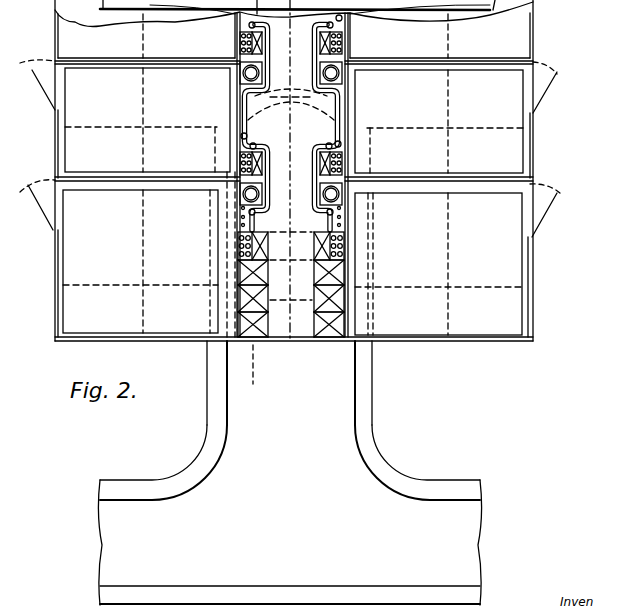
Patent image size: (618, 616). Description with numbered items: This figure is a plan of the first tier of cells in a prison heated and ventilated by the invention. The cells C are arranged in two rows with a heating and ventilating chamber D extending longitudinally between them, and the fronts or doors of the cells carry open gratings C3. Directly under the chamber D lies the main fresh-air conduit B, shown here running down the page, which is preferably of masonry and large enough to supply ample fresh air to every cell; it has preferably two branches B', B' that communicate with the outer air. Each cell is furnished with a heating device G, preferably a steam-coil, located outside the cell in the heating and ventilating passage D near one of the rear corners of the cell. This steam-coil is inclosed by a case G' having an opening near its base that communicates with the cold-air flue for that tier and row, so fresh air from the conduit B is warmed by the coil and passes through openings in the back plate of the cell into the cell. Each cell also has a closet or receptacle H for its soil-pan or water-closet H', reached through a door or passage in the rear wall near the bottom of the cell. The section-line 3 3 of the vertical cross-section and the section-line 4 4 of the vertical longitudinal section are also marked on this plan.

The main fresh-air conduit B is at (289, 383).
The branch of the fresh-air conduit B' is at (289, 515).
The cell C is at (293, 202).
The open grating C3 is at (300, 198).
The heating and ventilating chamber D is at (291, 170).
The heating device G is at (345, 43).
The case G' is at (229, 43).
The closet or receptacle H is at (226, 80).
The soil-pan or water-closet H' is at (353, 76).
The section-line 3 3 is at (236, 277).
The section-line 4 4 is at (250, 375).